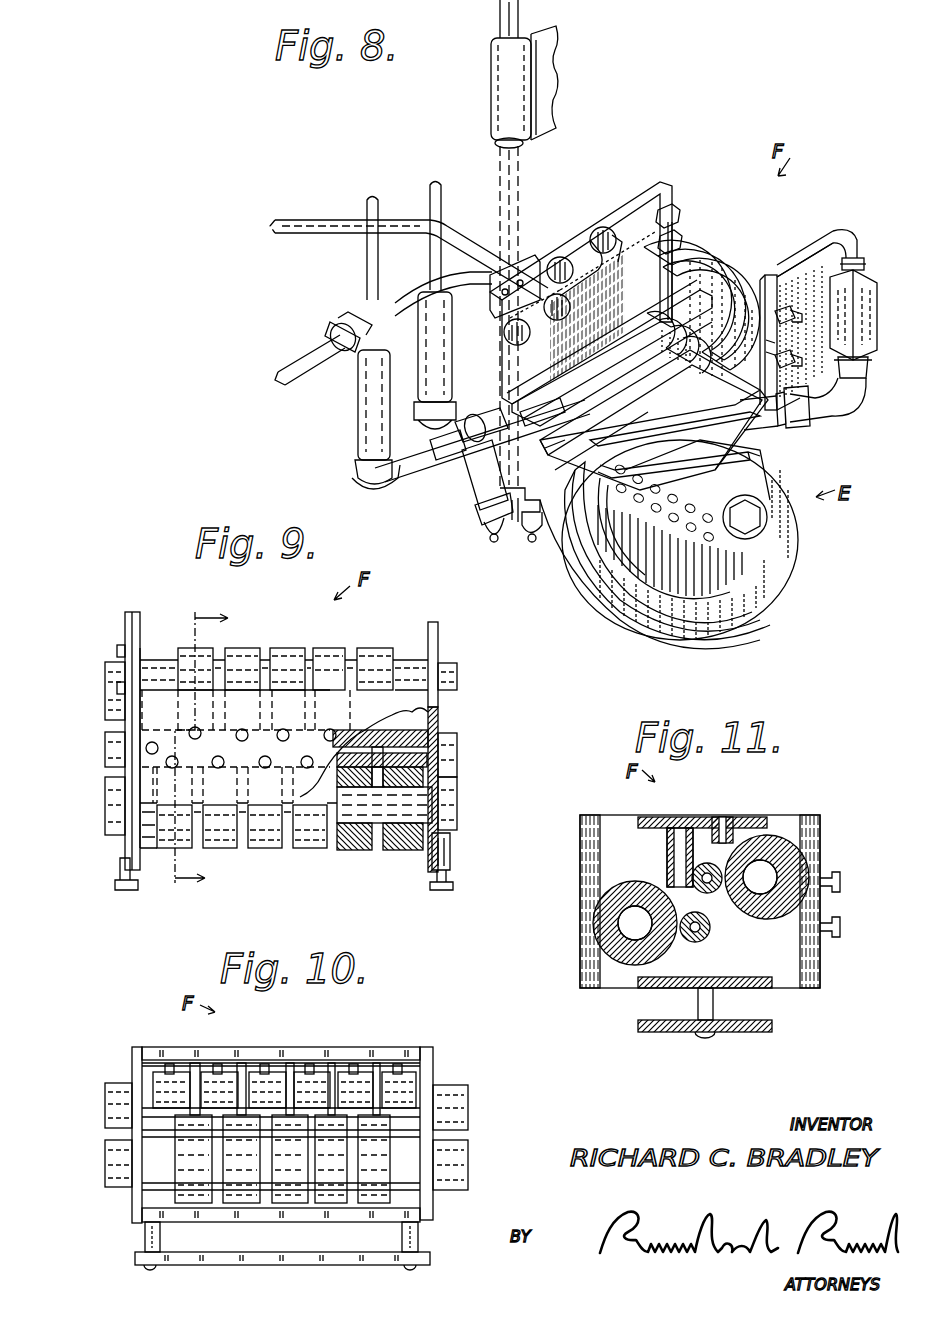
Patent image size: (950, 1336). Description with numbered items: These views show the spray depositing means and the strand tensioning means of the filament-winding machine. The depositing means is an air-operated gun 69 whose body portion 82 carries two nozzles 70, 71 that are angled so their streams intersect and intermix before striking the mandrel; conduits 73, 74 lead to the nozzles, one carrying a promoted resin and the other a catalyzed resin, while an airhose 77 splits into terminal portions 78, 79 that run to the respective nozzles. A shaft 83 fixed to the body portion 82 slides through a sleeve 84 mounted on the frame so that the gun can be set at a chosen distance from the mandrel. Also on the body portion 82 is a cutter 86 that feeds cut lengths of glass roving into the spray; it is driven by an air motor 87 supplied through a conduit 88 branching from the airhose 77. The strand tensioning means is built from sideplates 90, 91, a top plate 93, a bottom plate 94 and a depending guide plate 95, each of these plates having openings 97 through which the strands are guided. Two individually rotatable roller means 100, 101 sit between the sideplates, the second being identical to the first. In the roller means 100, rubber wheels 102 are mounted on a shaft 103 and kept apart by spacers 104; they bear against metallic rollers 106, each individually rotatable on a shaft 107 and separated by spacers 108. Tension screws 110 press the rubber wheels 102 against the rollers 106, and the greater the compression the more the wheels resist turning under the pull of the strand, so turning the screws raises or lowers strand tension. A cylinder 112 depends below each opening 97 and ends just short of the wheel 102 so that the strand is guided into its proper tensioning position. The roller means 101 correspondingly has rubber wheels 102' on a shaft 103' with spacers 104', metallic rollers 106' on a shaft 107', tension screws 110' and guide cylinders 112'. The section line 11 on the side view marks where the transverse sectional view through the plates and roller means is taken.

In FIG. 9, the section line 11- 11 is at (219, 753).
In FIG. 8, the gun 69 is at (449, 499).
In FIG. 8, the nozzle 70 is at (530, 545).
In FIG. 8, the nozzle 71 is at (490, 550).
In FIG. 8, the conduit 73 is at (441, 196).
In FIG. 8, the conduit 74 is at (366, 206).
In FIG. 8, the airhose 77 is at (298, 370).
In FIG. 8, the terminal portion 78 is at (365, 380).
In FIG. 8, the terminal portion 79 is at (470, 295).
In FIG. 8, the body portion 82 is at (500, 372).
In FIG. 8, the shaft 83 is at (520, 178).
In FIG. 8, the sleeve 84 is at (495, 78).
In FIG. 8, the cutter 86 is at (795, 546).
In FIG. 8, the air motor 87 is at (762, 460).
In FIG. 8, the conduit 88 is at (802, 232).
In FIG. 8, the sideplate 90 is at (760, 276).
In FIG. 9, the sideplate 90 is at (430, 640).
In FIG. 10, the sideplate 90 is at (132, 1063).
In FIG. 11, the sideplate 90 is at (820, 966).
In FIG. 8, the sideplate 91 is at (648, 196).
In FIG. 9, the sideplate 91 is at (138, 645).
In FIG. 10, the sideplate 91 is at (428, 1080).
In FIG. 9, the top plate 93 is at (250, 712).
In FIG. 10, the top plate 93 is at (408, 1048).
In FIG. 11, the top plate 93 is at (640, 830).
In FIG. 8, the bottom plate 94 is at (634, 344).
In FIG. 10, the bottom plate 94 is at (414, 1224).
In FIG. 11, the bottom plate 94 is at (650, 990).
In FIG. 8, the depending guide plate 95 is at (674, 420).
In FIG. 10, the depending guide plate 95 is at (425, 1268).
In FIG. 11, the depending guide plate 95 is at (775, 1026).
In FIG. 9, the openings 97 is at (330, 742).
In FIG. 10, the openings 97 is at (340, 1050).
In FIG. 11, the openings 97 is at (678, 816).
In FIG. 11, the roller means 100 is at (810, 828).
In FIG. 11, the roller means 101 is at (567, 969).
In FIG. 8, the rubber wheel 102 is at (702, 300).
In FIG. 9, the rubber wheel 102 is at (264, 850).
In FIG. 10, the rubber wheel 102 is at (322, 1076).
In FIG. 11, the rubber wheel 102 is at (804, 877).
In FIG. 9, the rubber wheel 102' is at (285, 652).
In FIG. 10, the rubber wheel 102' is at (193, 1227).
In FIG. 11, the rubber wheel 102' is at (604, 923).
In FIG. 9, the shaft 103 is at (421, 805).
In FIG. 11, the shaft 103 is at (784, 903).
In FIG. 11, the shaft 103' is at (592, 922).
In FIG. 9, the spacer 104 is at (282, 835).
In FIG. 9, the spacer 104' is at (284, 645).
In FIG. 10, the spacer 104' is at (282, 1182).
In FIG. 9, the metallic roller 106 is at (419, 727).
In FIG. 10, the metallic roller 106 is at (324, 1068).
In FIG. 11, the metallic roller 106 is at (701, 827).
In FIG. 11, the metallic roller 106' is at (691, 950).
In FIG. 8, the shaft 107 is at (709, 346).
In FIG. 9, the shaft 107 is at (439, 767).
In FIG. 11, the shaft 107 is at (728, 904).
In FIG. 8, the shaft 107' is at (712, 366).
In FIG. 11, the shaft 107' is at (725, 940).
In FIG. 9, the spacer 108 is at (408, 750).
In FIG. 8, the tension screw 110 is at (746, 270).
In FIG. 9, the tension screw 110 is at (286, 866).
In FIG. 11, the tension screw 110 is at (858, 873).
In FIG. 8, the tension screw 110' is at (761, 277).
In FIG. 11, the tension screw 110' is at (862, 920).
In FIG. 10, the cylinder 112 is at (283, 1065).
In FIG. 11, the cylinder 112 is at (771, 812).
In FIG. 10, the cylinder 112' is at (162, 1045).
In FIG. 11, the cylinder 112' is at (640, 855).